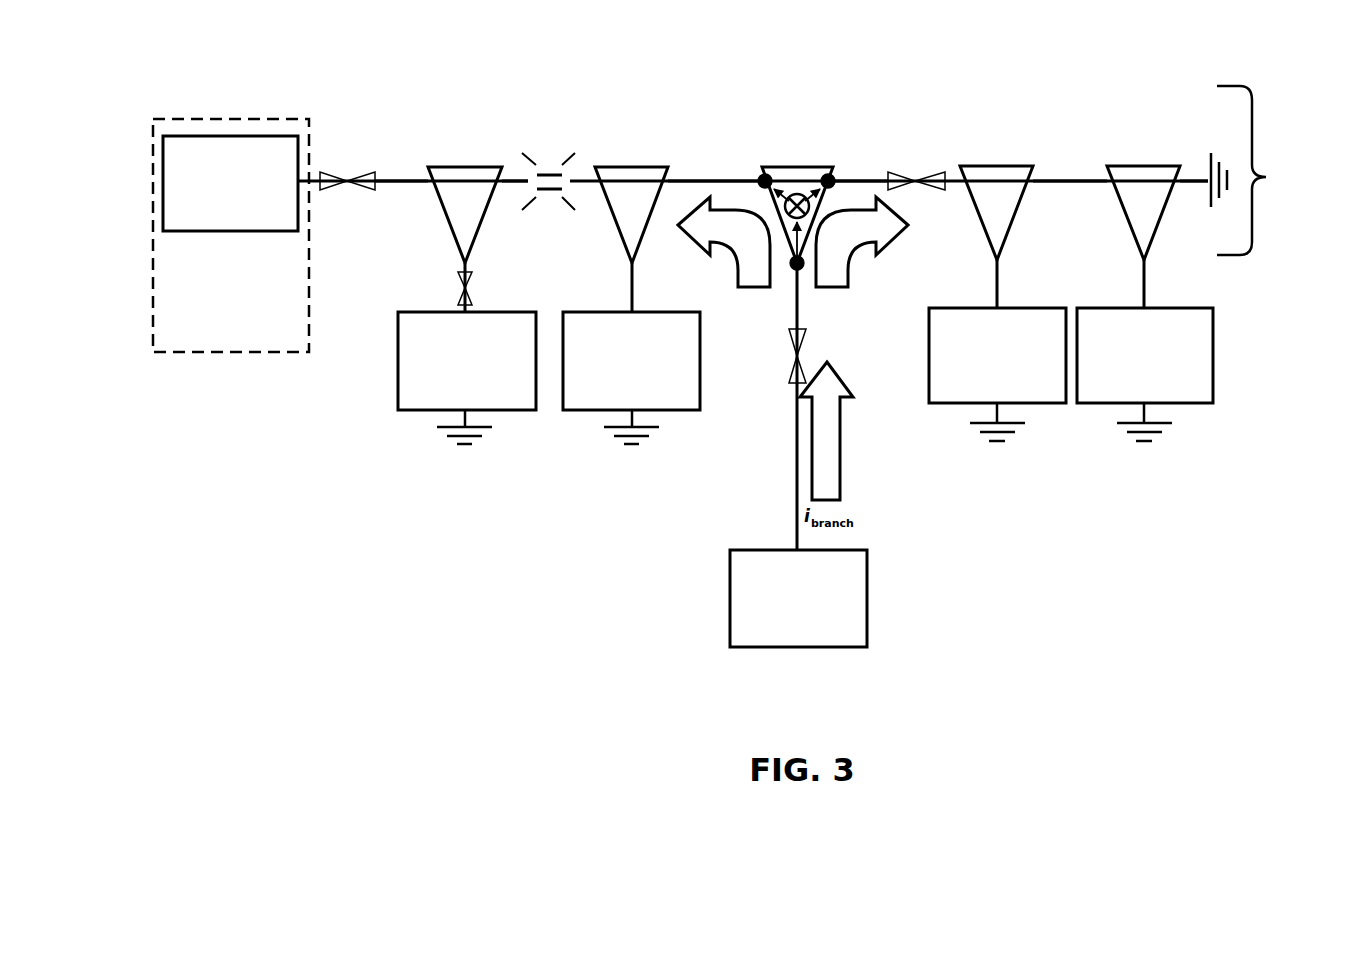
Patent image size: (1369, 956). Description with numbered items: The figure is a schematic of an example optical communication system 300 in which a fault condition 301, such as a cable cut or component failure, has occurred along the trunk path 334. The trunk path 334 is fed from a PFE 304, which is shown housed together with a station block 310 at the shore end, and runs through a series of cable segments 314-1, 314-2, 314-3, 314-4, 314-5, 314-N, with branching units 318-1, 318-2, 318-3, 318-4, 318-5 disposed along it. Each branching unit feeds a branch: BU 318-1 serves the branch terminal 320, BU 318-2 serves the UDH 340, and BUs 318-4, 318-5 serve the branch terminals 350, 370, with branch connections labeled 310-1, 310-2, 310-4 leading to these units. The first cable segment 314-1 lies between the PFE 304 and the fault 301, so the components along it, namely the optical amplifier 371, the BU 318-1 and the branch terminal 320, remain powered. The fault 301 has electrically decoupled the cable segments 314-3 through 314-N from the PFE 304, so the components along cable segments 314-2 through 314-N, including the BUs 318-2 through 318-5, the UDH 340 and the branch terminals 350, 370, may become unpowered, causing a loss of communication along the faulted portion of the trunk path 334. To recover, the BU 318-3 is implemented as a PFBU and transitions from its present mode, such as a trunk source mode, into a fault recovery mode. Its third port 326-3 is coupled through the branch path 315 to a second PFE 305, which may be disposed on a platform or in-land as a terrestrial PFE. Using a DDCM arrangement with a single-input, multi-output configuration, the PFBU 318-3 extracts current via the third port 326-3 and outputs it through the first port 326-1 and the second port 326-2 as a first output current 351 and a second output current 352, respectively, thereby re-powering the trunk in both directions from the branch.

The optical communication system 300 is at (287, 105).
The PFE 304 is at (211, 209).
The cable landing station 310 is at (211, 335).
The optical amplifier 371 is at (358, 170).
The first cable segment 314-1 is at (396, 178).
The cable segment 314-2 is at (504, 190).
The cable segment 314-3 is at (700, 176).
The cable segment 314-4 is at (869, 169).
The cable segment 314-5 is at (1056, 172).
The cable segment 314-N is at (1192, 172).
The fault condition 301 is at (549, 161).
The BU 318-1 is at (458, 167).
The BU 318-2 is at (630, 167).
The PFBU 318-3 is at (805, 167).
The BU 318-4 is at (981, 220).
The BU 318-5 is at (1128, 221).
The first port 326-1 is at (762, 166).
The second port 326-2 is at (835, 168).
The third port 326-3 is at (803, 269).
The branch path 310-1 is at (426, 264).
The branch path 310-2 is at (603, 266).
The branch path 310-4 is at (1151, 298).
The branch path 315 is at (791, 411).
The branch terminal 320 is at (449, 396).
The UDH 340 is at (614, 388).
The branch terminal 350 is at (979, 391).
The branch terminal 370 is at (1127, 391).
The PFE 305 is at (779, 625).
The first output current 351 is at (728, 238).
The second output current 352 is at (886, 238).
The trunk path 334 is at (825, 170).